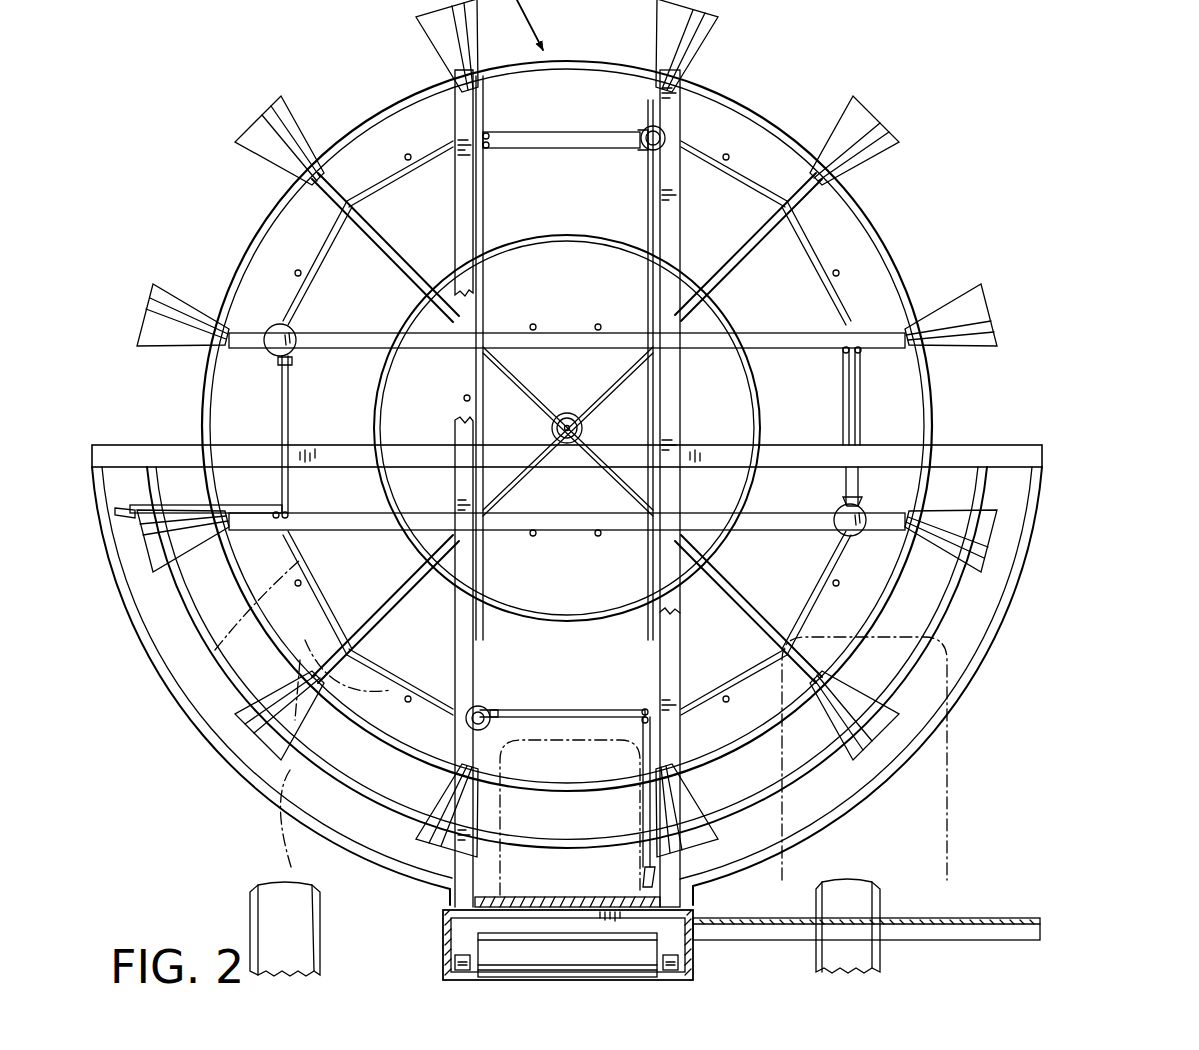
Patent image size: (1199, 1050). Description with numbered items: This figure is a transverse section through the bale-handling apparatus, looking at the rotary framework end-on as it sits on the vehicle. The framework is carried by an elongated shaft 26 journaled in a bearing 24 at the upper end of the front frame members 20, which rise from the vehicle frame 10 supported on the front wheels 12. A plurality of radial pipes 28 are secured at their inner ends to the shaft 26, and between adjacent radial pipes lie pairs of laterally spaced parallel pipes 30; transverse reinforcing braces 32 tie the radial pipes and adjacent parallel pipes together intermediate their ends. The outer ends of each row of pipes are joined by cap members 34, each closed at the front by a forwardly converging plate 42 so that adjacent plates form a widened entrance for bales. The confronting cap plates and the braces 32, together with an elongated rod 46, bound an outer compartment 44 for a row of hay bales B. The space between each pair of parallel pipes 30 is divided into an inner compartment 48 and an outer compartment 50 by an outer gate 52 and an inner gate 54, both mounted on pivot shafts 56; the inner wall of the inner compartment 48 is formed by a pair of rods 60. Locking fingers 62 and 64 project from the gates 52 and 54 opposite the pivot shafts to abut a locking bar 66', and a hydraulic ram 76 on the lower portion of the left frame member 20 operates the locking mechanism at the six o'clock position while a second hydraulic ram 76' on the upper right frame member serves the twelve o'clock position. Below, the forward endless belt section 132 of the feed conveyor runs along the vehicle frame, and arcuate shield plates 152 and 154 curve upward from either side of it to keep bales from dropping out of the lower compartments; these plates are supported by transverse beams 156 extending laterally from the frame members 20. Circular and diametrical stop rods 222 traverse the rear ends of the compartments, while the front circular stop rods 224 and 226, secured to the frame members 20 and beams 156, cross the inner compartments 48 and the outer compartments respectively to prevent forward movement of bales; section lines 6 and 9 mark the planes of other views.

The section line 6- 6 is at (445, 705).
The section line 9- 9 is at (140, 272).
The frame 10 is at (445, 958).
The front wheels 12 is at (276, 900).
The front frame members 20 is at (681, 208).
The bearings 24 is at (584, 428).
The elongated shaft 26 is at (552, 428).
The radial pipes 28 is at (347, 200).
The parallel pipes 30 is at (485, 106).
The transverse reinforcing braces 32 is at (352, 217).
The cap members 34 is at (692, 38).
The forwardly converging end plate 42 is at (455, 40).
The outer compartment 44 is at (380, 85).
The elongated rod 46 is at (407, 155).
The inner compartment 48 is at (530, 210).
The outer compartment 50 is at (195, 430).
The outer gate 52 is at (568, 130).
The inner gate 54 is at (590, 148).
The pivot shafts 56 is at (482, 143).
The rods 60 is at (596, 326).
The locking fingers 62 is at (640, 130).
The locking fingers 64 is at (640, 150).
The ball joint 66' is at (562, 421).
The hydraulic ram 76 is at (449, 725).
The second hydraulic ram 76' is at (680, 126).
The forward endless belt section 132 is at (567, 940).
The arcuate shield plate 152 is at (178, 700).
The arcuate shield plate 154 is at (945, 690).
The transverse beams 156 is at (716, 445).
The circular and diametrical stop rods 222 is at (272, 216).
The inner front circular stop rod 224 is at (592, 238).
The outer front circular stop rod 226 is at (332, 776).
The hay bales B is at (290, 782).